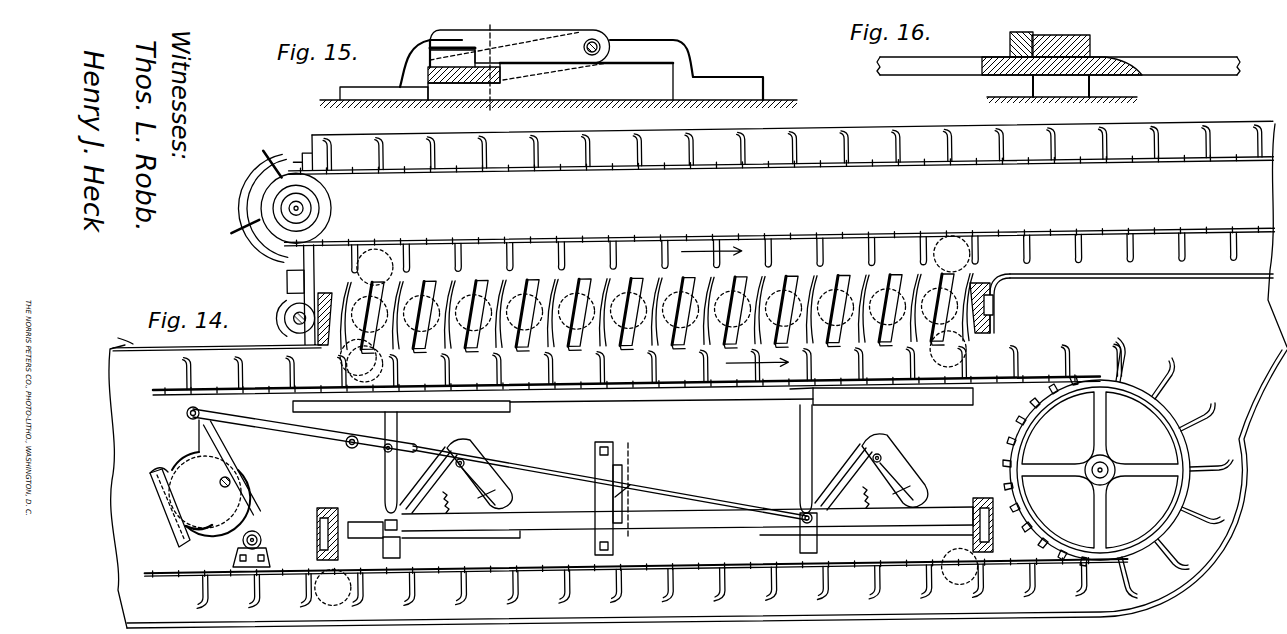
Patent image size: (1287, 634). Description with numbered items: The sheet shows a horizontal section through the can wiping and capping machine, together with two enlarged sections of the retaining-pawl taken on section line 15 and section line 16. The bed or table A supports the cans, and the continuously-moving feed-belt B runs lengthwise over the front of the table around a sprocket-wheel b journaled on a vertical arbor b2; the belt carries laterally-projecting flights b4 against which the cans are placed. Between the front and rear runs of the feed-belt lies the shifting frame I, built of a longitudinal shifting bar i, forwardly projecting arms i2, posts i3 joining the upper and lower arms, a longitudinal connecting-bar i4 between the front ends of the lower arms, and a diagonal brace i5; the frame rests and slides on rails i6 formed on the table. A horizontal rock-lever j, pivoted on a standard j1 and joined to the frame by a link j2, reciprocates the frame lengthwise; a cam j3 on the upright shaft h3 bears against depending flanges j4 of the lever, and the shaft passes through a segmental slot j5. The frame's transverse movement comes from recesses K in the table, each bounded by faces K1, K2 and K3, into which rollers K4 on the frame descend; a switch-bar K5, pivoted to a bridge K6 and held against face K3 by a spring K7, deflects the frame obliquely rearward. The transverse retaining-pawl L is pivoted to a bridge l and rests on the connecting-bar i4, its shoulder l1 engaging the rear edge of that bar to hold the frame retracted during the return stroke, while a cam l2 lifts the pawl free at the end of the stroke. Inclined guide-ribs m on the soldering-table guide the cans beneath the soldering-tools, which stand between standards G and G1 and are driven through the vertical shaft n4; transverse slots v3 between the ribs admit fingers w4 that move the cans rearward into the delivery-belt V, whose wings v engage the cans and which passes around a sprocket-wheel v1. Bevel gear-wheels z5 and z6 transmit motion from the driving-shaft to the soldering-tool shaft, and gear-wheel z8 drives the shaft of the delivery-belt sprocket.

In FIG. 15, the bed or table A is at (797, 100).
In FIG. 16, the bed or table A is at (948, 99).
In FIG. 14, the bed or table A is at (1195, 315).
In FIG. 14, the feed-belt B is at (1009, 560).
In FIG. 14, the wings v is at (898, 148).
In FIG. 14, the delivery-belt V is at (830, 172).
In FIG. 14, the sprocket-wheel v1 is at (330, 206).
In FIG. 14, the transverse slots v3 is at (800, 283).
In FIG. 14, the gear-wheel z8 is at (256, 191).
In FIG. 14, the bevel gear-wheel z6 is at (288, 308).
In FIG. 14, the bevel gear-wheel z5 is at (115, 332).
In FIG. 14, the vertical shaft n4 is at (283, 337).
In FIG. 14, the standard G is at (317, 511).
In FIG. 14, the standard G1 is at (990, 320).
In FIG. 14, the inclined guide-ribs m is at (873, 300).
In FIG. 14, the fingers w4 is at (630, 343).
In FIG. 14, the sprocket-wheel b is at (1118, 468).
In FIG. 14, the vertical arbor b2 is at (1107, 466).
In FIG. 14, the wings or flights b4 is at (1246, 545).
In FIG. 14, the longitudinal shifting bar i is at (699, 394).
In FIG. 14, the arms i2 is at (800, 421).
In FIG. 14, the posts i3 is at (397, 425).
In FIG. 15, the longitudinal connecting-bar i4 is at (428, 75).
In FIG. 16, the longitudinal connecting-bar i4 is at (1058, 56).
In FIG. 14, the longitudinal connecting-bar i4 is at (708, 525).
In FIG. 14, the diagonal brace i5 is at (706, 501).
In FIG. 14, the rails i6 is at (532, 545).
In FIG. 14, the shifting frame I is at (785, 449).
In FIG. 14, the horizontal rock-lever j is at (198, 428).
In FIG. 14, the standard j1 is at (268, 546).
In FIG. 14, the link j2 is at (256, 425).
In FIG. 14, the cam j3 is at (172, 468).
In FIG. 14, the depending flanges j4 is at (274, 494).
In FIG. 14, the segmental slot j5 is at (202, 534).
In FIG. 14, the upright shaft h3 is at (231, 482).
In FIG. 14, the recesses K is at (472, 451).
In FIG. 14, the face K1 is at (450, 447).
In FIG. 14, the face K2 is at (520, 478).
In FIG. 14, the face K3 is at (895, 537).
In FIG. 14, the rollers K4 is at (922, 438).
In FIG. 14, the switch-bars K5 is at (850, 480).
In FIG. 14, the bridge K6 is at (505, 498).
In FIG. 14, the spring K7 is at (870, 510).
In FIG. 15, the bridge l is at (680, 41).
In FIG. 16, the bridge l is at (1090, 36).
In FIG. 14, the bridge l is at (608, 498).
In FIG. 15, the shoulder l1 is at (480, 58).
In FIG. 15, the cam l2 is at (503, 77).
In FIG. 16, the cam l2 is at (1107, 57).
In FIG. 14, the cam l2 is at (595, 507).
In FIG. 15, the transverse retaining-pawl L is at (520, 46).
In FIG. 16, the transverse retaining-pawl L is at (1040, 26).
In FIG. 14, the transverse retaining-pawl L is at (628, 487).
In FIG. 14, the section line 15 is at (637, 491).
In FIG. 15, the section line 16 is at (491, 67).